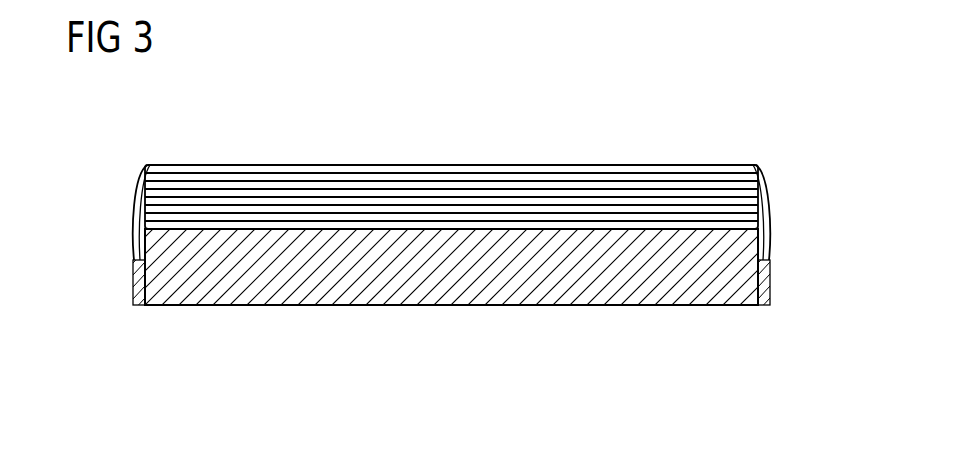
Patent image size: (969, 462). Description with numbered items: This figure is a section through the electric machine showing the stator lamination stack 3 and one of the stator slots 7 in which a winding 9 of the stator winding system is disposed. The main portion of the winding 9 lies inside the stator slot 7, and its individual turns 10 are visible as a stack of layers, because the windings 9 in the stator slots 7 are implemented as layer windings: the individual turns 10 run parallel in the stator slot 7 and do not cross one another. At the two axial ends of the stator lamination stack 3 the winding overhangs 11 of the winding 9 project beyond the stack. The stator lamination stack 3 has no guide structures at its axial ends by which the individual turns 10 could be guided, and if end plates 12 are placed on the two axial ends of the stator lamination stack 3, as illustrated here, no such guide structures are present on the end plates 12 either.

The stator lamination stack 3 is at (435, 290).
The stator slots 7 is at (675, 165).
The windings 9 is at (530, 118).
The individual turns 10 is at (257, 221).
The winding overhangs 11 is at (126, 150).
The end plates 12 is at (132, 277).